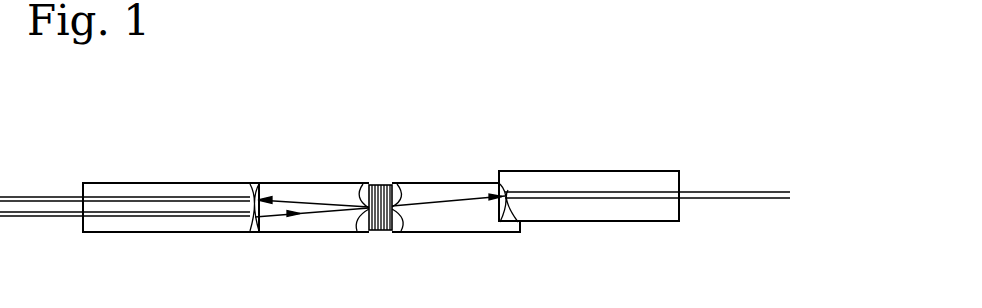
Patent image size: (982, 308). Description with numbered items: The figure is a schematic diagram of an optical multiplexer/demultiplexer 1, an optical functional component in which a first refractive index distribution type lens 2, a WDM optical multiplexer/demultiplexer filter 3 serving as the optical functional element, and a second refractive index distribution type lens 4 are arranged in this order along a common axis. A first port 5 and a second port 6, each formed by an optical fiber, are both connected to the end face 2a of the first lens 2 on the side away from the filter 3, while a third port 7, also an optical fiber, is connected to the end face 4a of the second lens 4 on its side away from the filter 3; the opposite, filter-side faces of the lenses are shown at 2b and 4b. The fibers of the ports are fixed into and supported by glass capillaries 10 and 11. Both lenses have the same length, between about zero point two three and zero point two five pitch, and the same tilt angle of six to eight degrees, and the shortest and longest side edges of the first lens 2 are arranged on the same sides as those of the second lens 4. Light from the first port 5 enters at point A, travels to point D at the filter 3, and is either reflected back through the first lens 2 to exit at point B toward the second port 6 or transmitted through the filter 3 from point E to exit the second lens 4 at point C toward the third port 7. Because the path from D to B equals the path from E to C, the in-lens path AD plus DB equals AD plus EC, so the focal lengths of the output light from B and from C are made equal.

The optical multiplexer/demultiplexer 1 is at (383, 146).
The first refractive index distribution type lens 2 is at (301, 184).
The end face of the first refractive index distribution type lens 2a is at (247, 233).
The end face of first lens 2b is at (362, 233).
The WDM optical multiplexer/demultiplexer filter 3 is at (378, 233).
The second refractive index distribution type lens 4 is at (432, 184).
The end face of the second refractive index distribution type lens 4a is at (499, 184).
The end face of second lens 4b is at (404, 233).
The first port 5 is at (41, 218).
The second port 6 is at (42, 196).
The third port 7 is at (727, 200).
The glass capillary 10 is at (154, 234).
The glass capillary 11 is at (588, 222).
The point A is at (256, 233).
The point B is at (253, 185).
The point C is at (505, 200).
The point D is at (360, 184).
The point E is at (413, 184).